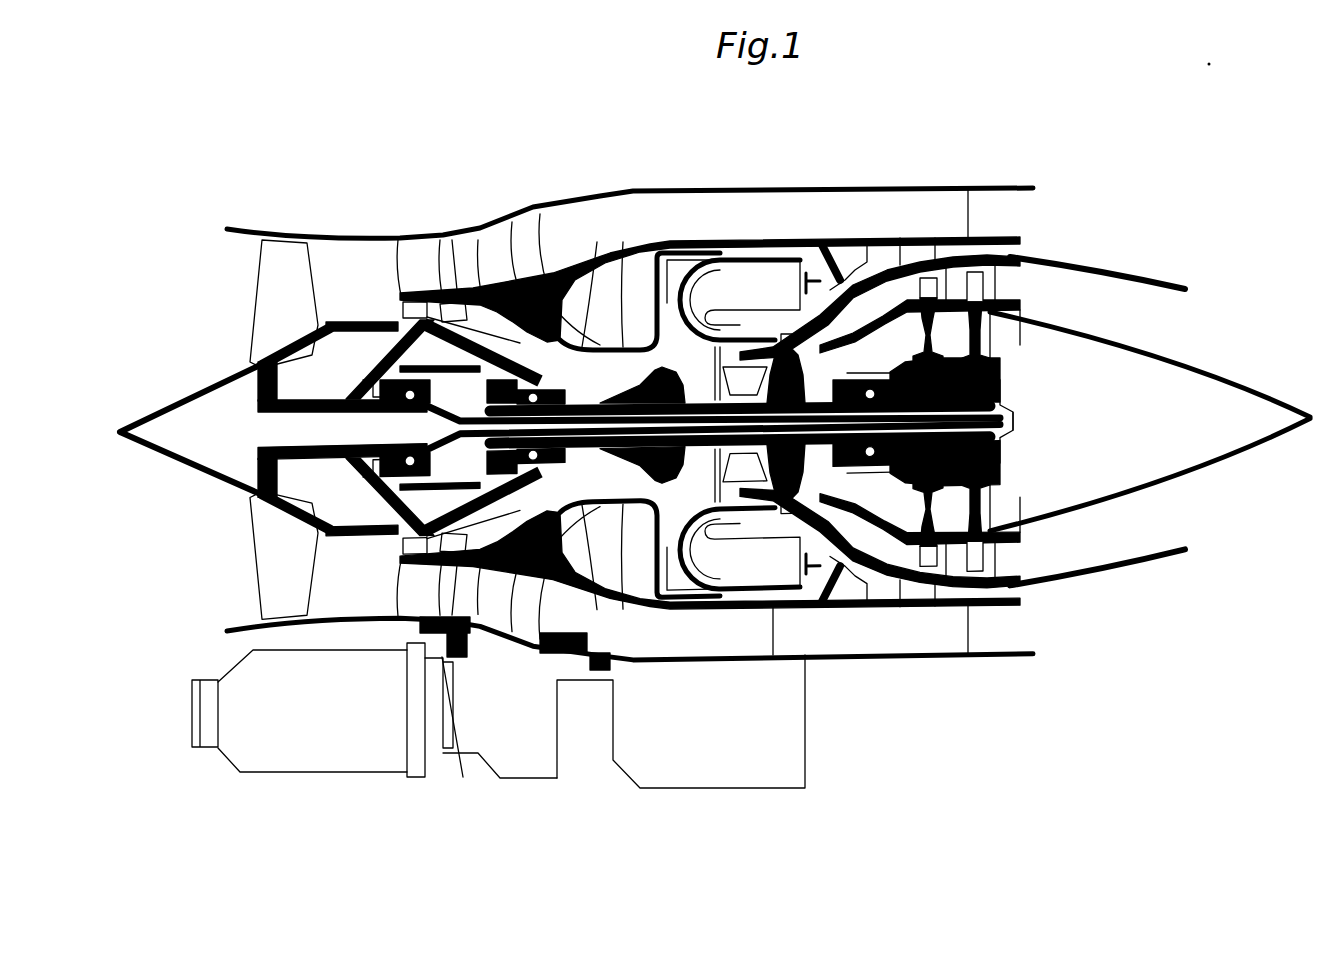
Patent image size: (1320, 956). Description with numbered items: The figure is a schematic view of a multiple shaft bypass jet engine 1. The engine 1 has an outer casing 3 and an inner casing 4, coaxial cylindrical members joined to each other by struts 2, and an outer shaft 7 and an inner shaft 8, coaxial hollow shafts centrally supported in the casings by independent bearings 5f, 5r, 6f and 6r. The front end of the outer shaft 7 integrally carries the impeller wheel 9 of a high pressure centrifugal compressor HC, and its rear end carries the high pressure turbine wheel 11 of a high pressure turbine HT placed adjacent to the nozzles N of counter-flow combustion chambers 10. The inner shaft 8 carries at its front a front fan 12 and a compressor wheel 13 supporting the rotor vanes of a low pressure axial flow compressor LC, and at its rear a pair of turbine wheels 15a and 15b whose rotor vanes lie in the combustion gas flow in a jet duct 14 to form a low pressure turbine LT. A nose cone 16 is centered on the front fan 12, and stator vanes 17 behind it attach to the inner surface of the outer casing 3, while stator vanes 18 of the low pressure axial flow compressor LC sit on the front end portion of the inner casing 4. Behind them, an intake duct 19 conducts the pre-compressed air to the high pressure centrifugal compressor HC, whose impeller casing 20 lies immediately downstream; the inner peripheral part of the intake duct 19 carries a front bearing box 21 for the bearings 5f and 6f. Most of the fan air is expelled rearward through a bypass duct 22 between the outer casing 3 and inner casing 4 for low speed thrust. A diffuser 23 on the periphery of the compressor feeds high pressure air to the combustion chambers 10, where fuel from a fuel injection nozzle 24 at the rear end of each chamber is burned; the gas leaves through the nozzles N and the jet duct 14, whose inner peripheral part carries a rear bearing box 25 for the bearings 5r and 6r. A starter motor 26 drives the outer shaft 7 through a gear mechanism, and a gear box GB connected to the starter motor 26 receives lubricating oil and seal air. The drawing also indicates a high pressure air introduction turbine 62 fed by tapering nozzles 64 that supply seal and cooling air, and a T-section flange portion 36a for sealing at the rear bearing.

The engine 1 is at (1084, 238).
The struts 2 is at (593, 620).
The outer casing 3 is at (998, 188).
The inner casing 4 is at (1008, 237).
The bearing 5f is at (558, 290).
The bearing 5r is at (900, 238).
The bearing 6f is at (400, 375).
The bearing 6r is at (935, 238).
The outer shaft 7 is at (503, 448).
The inner shaft 8 is at (360, 394).
The impeller wheel 9 is at (664, 300).
The counter-flow combustion chambers 10 is at (780, 330).
The high pressure turbine wheel 11 is at (820, 250).
The front fan 12 is at (256, 302).
The compressor wheel 13 is at (425, 300).
The jet duct 14 is at (1145, 318).
The turbine wheel 15a is at (990, 335).
The turbine wheel 15b is at (985, 350).
The nose cone 16 is at (166, 470).
The stator vanes 17 is at (358, 572).
The stator vanes 18 is at (462, 300).
The intake duct 19 is at (522, 285).
The impeller casing 20 is at (606, 300).
The front bearing box 21 is at (492, 590).
The bypass duct 22 is at (1010, 628).
The diffuser 23 is at (714, 300).
The fuel injection nozzle 24 is at (868, 600).
The rear bearing box 25 is at (900, 600).
The starter motor 26 is at (312, 770).
The flange portion 36a is at (880, 300).
The high pressure air introduction turbine 62 is at (702, 255).
The nozzles 64 is at (752, 293).
The low pressure axial flow compressor LC is at (410, 180).
The high pressure centrifugal compressor HC is at (677, 158).
The nozzles N is at (803, 270).
The high pressure turbine HT is at (770, 530).
The low pressure turbine LT is at (915, 577).
The gear box GB is at (535, 779).